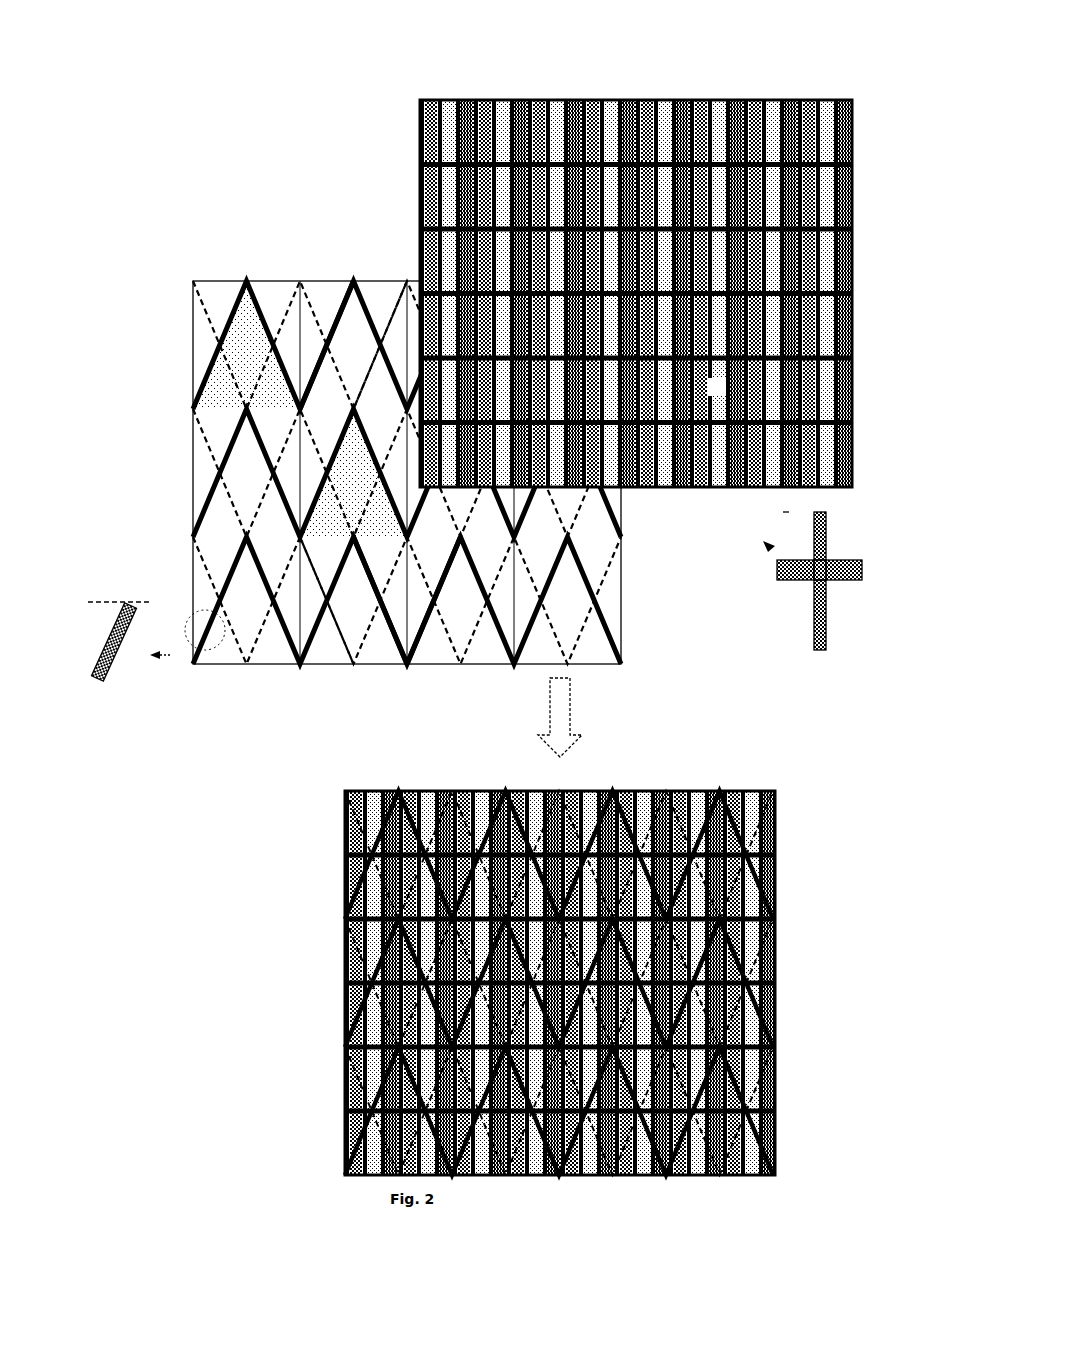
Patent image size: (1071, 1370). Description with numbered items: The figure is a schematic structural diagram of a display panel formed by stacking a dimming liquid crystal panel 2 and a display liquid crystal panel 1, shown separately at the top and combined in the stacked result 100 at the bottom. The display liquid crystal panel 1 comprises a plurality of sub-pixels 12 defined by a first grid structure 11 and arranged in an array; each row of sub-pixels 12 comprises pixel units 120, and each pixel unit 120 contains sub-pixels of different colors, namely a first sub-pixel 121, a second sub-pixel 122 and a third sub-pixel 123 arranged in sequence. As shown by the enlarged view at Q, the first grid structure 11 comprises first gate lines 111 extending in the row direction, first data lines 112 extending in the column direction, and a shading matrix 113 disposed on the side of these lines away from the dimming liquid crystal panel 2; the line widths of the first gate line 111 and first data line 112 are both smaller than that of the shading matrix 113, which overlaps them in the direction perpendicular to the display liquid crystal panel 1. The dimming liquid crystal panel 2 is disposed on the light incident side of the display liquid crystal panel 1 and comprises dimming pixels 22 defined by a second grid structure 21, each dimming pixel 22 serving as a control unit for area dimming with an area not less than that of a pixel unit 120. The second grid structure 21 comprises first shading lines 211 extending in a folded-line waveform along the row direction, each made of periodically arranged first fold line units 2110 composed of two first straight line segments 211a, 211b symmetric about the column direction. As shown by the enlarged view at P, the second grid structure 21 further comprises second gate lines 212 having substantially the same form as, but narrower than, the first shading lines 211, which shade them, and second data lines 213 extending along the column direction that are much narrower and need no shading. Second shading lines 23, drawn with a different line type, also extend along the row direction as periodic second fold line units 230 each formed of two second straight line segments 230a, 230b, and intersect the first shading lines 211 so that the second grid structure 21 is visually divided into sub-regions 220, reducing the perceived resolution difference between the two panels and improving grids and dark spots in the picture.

The display liquid crystal panel 1 is at (772, 78).
The first grid structure 11 is at (853, 110).
The sub-pixel 12 is at (853, 187).
The pixel unit 120 is at (494, 44).
The first sub-pixel 121 is at (427, 99).
The second sub-pixel 122 is at (446, 99).
The third sub-pixel 123 is at (468, 99).
The first gate line 111 is at (848, 562).
The first data line 112 is at (828, 590).
The shading matrix 113 is at (797, 583).
The dimming liquid crystal panel 2 is at (252, 222).
The second grid structure 21 is at (367, 472).
The dimming pixel 22 is at (205, 377).
The second shading line 23 is at (208, 320).
The sub-region 220 is at (300, 409).
The first fold line unit 2110 is at (395, 236).
The first straight line segment 211a is at (322, 357).
The first straight line segment 211b is at (386, 335).
The first shading line 211 is at (200, 560).
The second gate line 212 is at (102, 660).
The second data line 213 is at (419, 640).
The second fold line unit 230 is at (389, 732).
The second straight line segment 230a is at (335, 622).
The second straight line segment 230b is at (370, 630).
The combined structure 100 is at (766, 780).